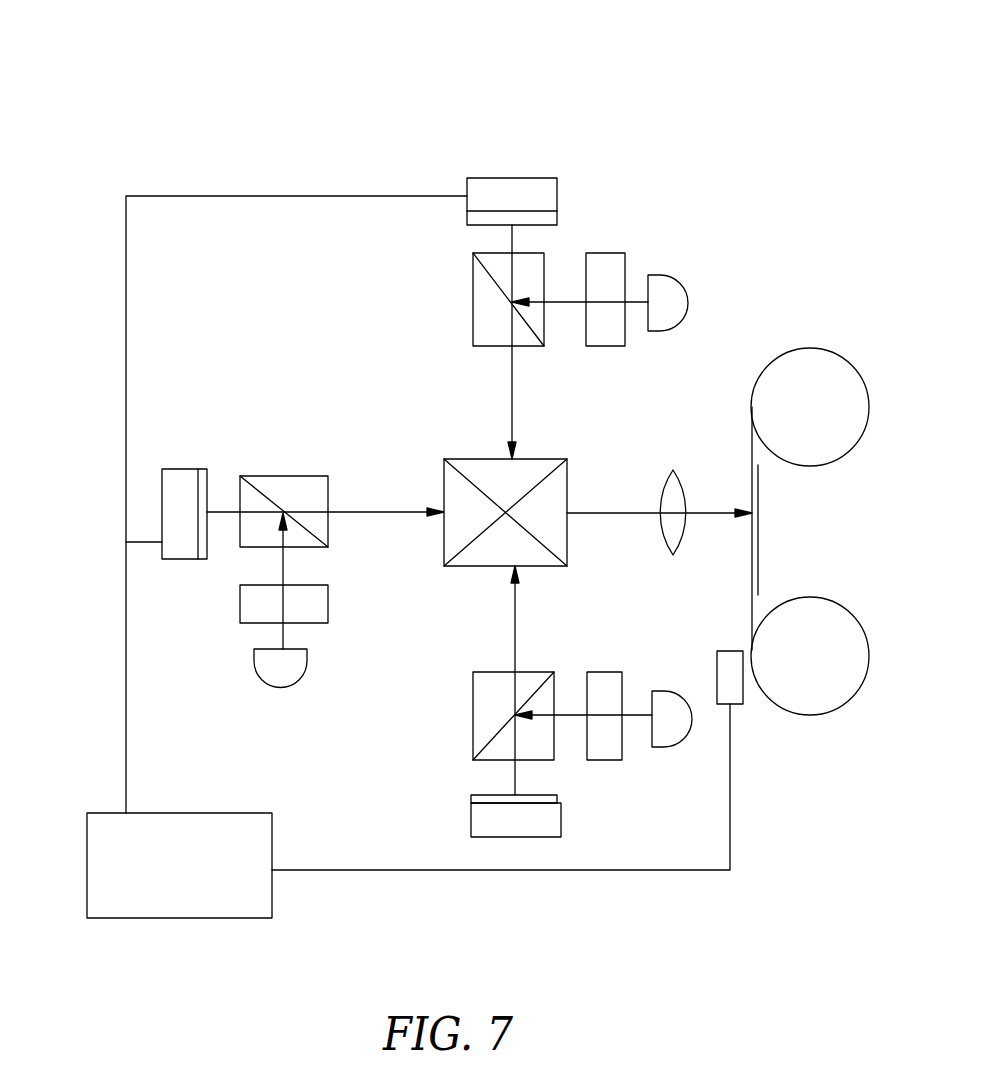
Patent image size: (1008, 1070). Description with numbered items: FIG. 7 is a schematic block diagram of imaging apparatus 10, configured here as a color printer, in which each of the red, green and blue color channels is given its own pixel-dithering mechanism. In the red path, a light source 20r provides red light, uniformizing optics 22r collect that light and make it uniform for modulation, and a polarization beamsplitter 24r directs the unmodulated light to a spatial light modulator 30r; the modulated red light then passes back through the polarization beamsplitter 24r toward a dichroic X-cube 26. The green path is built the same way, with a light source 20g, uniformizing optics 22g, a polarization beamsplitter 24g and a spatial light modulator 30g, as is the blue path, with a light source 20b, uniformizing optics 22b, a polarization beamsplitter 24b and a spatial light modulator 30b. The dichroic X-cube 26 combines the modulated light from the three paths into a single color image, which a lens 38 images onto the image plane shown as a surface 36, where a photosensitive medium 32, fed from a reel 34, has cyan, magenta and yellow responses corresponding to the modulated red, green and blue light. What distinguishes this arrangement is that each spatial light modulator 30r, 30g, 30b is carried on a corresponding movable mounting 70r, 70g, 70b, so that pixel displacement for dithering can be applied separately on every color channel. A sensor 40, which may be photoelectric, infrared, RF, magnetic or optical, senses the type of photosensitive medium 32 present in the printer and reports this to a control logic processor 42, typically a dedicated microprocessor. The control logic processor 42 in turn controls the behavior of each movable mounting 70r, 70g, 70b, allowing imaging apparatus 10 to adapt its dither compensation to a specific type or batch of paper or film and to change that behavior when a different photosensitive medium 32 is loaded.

The imaging apparatus 10 is at (293, 118).
The movable mounting 70b is at (517, 178).
The spatial light modulator 30b is at (467, 218).
The polarization beamsplitter 24b is at (473, 270).
The uniformizing optics 22b is at (608, 253).
The light source 20b is at (690, 290).
The movable mounting 70g is at (162, 505).
The spatial light modulator 30g is at (200, 469).
The polarization beamsplitter 24g is at (300, 476).
The uniformizing optics 22g is at (240, 610).
The light source 20g is at (280, 687).
The movable mounting 70r is at (507, 840).
The spatial light modulator 30r is at (471, 800).
The polarization beamsplitter 24r is at (473, 695).
The uniformizing optics 22r is at (612, 760).
The light source 20r is at (682, 747).
The dichroic X-cube 26 is at (567, 535).
The lens 38 is at (665, 480).
The photosensitive medium 32 is at (752, 450).
The reel 34 is at (863, 388).
The surface 36 is at (760, 525).
The sensor 40 is at (743, 683).
The control logic processor 42 is at (272, 833).